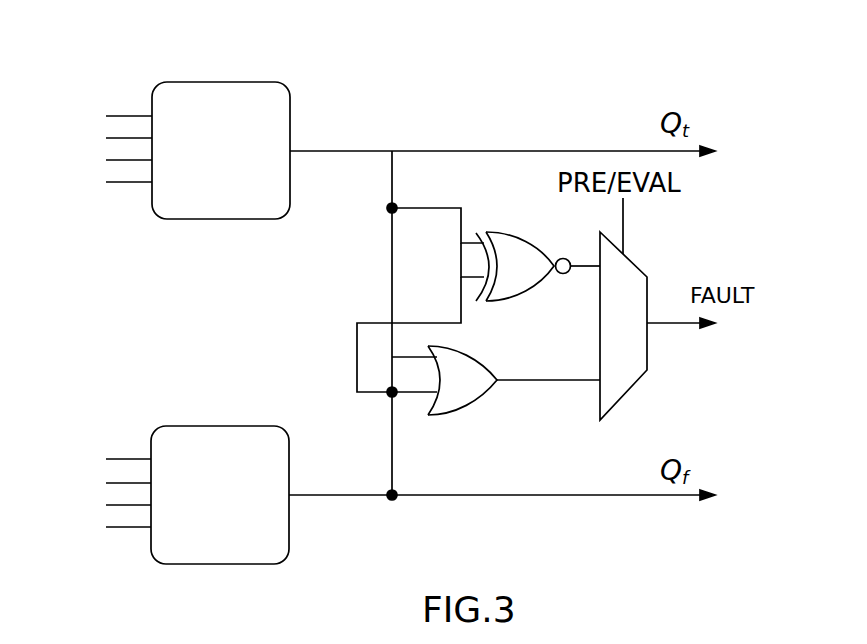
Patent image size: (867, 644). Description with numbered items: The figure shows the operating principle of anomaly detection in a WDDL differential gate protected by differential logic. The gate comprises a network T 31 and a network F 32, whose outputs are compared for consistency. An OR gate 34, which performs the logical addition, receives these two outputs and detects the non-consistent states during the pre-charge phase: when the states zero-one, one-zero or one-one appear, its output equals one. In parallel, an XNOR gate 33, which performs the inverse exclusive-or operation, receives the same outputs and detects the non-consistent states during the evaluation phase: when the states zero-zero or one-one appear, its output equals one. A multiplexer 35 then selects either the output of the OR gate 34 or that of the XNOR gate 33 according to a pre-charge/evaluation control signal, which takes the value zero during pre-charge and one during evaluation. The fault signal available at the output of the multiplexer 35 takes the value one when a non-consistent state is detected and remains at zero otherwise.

The network T 31 is at (201, 98).
The network F 32 is at (200, 437).
The XNOR gate 33 is at (520, 275).
The OR gate 34 is at (465, 389).
The multiplexer 35 is at (628, 270).